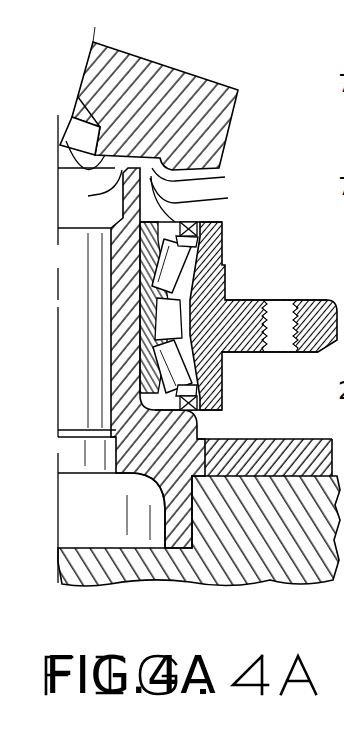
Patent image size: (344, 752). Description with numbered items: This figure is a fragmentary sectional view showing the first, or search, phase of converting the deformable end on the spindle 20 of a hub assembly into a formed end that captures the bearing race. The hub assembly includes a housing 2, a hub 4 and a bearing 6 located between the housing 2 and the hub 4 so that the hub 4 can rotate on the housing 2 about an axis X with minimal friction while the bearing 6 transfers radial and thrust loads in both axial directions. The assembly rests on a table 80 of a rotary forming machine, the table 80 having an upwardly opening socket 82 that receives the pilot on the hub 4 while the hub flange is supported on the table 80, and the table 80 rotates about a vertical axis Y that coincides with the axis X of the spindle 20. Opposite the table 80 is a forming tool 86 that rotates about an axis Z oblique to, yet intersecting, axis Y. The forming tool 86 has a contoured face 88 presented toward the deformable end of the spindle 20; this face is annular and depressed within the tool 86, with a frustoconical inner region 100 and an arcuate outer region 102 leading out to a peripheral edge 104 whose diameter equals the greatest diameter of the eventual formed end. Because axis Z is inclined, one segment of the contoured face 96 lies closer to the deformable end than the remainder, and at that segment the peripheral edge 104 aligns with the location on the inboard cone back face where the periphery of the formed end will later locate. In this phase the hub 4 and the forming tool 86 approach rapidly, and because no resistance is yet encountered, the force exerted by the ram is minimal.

The housing 2 is at (231, 346).
The hub 4 is at (263, 457).
The bearing 6 is at (178, 262).
The spindle 20 is at (120, 340).
The table 80 is at (273, 553).
The socket 82 is at (85, 491).
The forming tool 86 is at (146, 59).
The contoured face 88 is at (200, 224).
The contoured face 96 is at (88, 196).
The frustoconical inner region 100 is at (70, 148).
The outer region 102 is at (170, 199).
The peripheral edge 104 is at (177, 181).